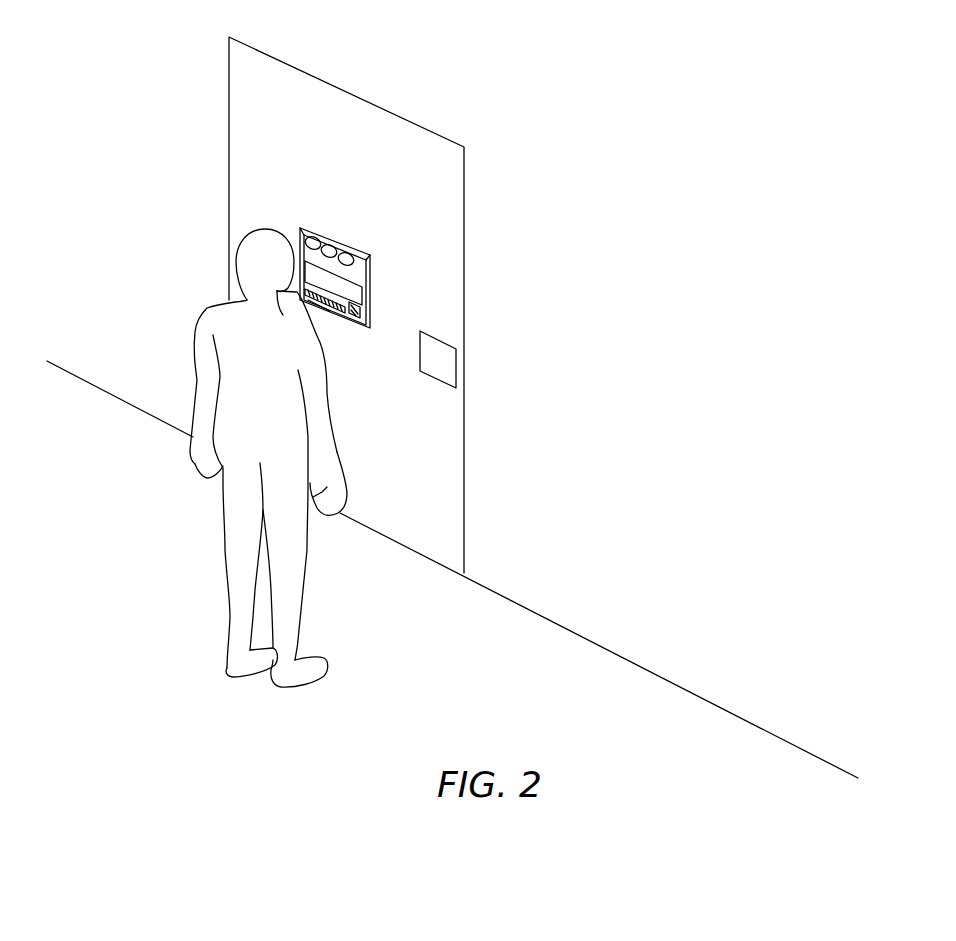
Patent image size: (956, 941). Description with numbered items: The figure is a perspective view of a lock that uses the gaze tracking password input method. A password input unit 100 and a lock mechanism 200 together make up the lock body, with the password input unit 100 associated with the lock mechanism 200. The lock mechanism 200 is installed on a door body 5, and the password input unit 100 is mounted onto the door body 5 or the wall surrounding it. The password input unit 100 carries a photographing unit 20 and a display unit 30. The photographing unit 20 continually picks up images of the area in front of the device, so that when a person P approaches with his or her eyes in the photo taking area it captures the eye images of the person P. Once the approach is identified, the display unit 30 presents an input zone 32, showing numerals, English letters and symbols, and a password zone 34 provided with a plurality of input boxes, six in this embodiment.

The door body 5 is at (260, 112).
The person P is at (201, 332).
The password input unit 100 is at (370, 247).
The photographing unit 20 is at (375, 275).
The display unit 30 is at (381, 341).
The input zone 32 is at (347, 322).
The password zone 34 is at (330, 315).
The lock mechanism 200 is at (456, 370).